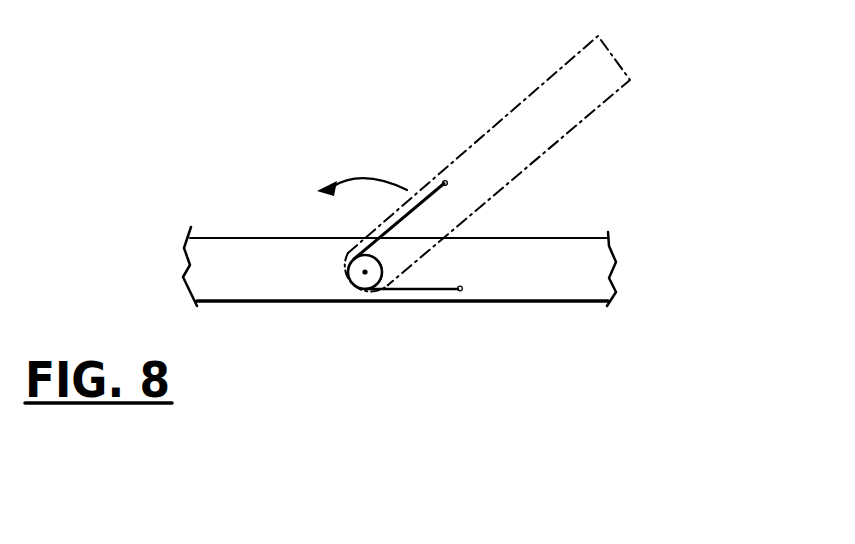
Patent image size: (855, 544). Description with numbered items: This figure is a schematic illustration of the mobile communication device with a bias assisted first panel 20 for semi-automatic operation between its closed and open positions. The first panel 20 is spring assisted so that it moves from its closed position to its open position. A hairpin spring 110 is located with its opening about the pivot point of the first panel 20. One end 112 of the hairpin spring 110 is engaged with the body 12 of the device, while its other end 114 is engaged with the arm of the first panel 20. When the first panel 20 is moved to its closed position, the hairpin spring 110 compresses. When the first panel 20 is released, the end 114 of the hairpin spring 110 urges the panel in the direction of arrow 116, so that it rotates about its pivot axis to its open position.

The body 12 is at (573, 245).
The first panel 20 is at (567, 63).
The hairpin spring 110 is at (400, 290).
The end 112 is at (445, 290).
The end 114 is at (432, 188).
The arrow 116 is at (353, 180).